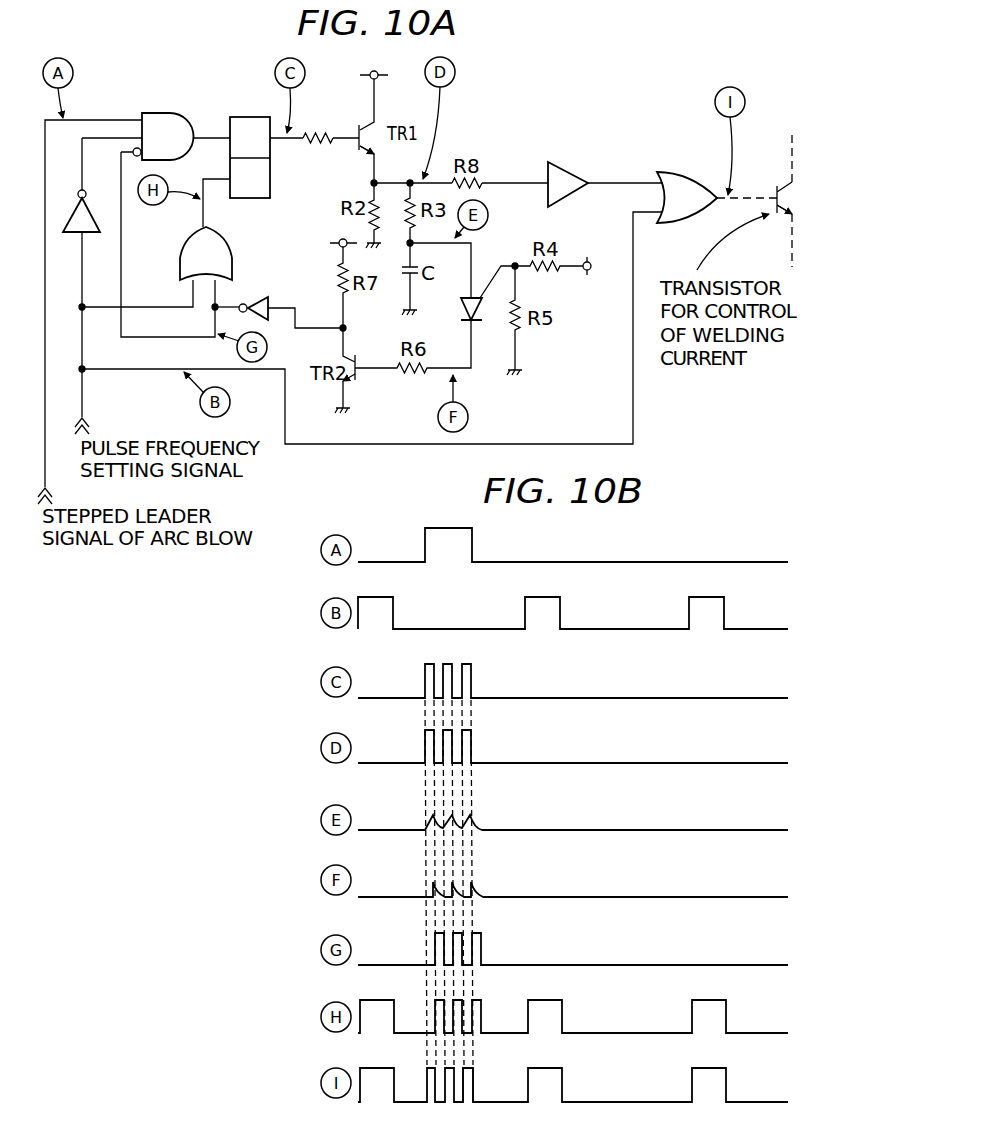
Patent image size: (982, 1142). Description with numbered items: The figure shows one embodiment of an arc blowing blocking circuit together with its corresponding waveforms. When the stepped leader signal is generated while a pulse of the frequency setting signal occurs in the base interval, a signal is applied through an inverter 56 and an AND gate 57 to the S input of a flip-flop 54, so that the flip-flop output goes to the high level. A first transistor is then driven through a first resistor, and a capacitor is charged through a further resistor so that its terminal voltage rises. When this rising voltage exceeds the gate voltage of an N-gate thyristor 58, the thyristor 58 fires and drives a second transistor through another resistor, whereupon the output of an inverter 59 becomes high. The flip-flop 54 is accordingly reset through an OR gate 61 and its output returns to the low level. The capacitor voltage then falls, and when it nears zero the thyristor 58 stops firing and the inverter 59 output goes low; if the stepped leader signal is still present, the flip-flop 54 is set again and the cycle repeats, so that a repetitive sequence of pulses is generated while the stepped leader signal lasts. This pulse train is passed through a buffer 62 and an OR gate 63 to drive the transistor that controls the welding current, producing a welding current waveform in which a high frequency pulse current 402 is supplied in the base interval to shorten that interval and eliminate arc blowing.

In FIG. 10A, the AND gate 57 is at (158, 112).
In FIG. 10A, the flip-flop 54 is at (245, 116).
In FIG. 10A, the inverter 56 is at (97, 233).
In FIG. 10A, the OR gate 61 is at (182, 243).
In FIG. 10A, the inverter 59 is at (263, 296).
In FIG. 10A, the N-gate thyristor 58 is at (478, 307).
In FIG. 10A, the buffer 62 is at (548, 175).
In FIG. 10A, the OR gate 63 is at (672, 173).
In FIG. 10B, the high frequency pulse current 402 is at (474, 1075).